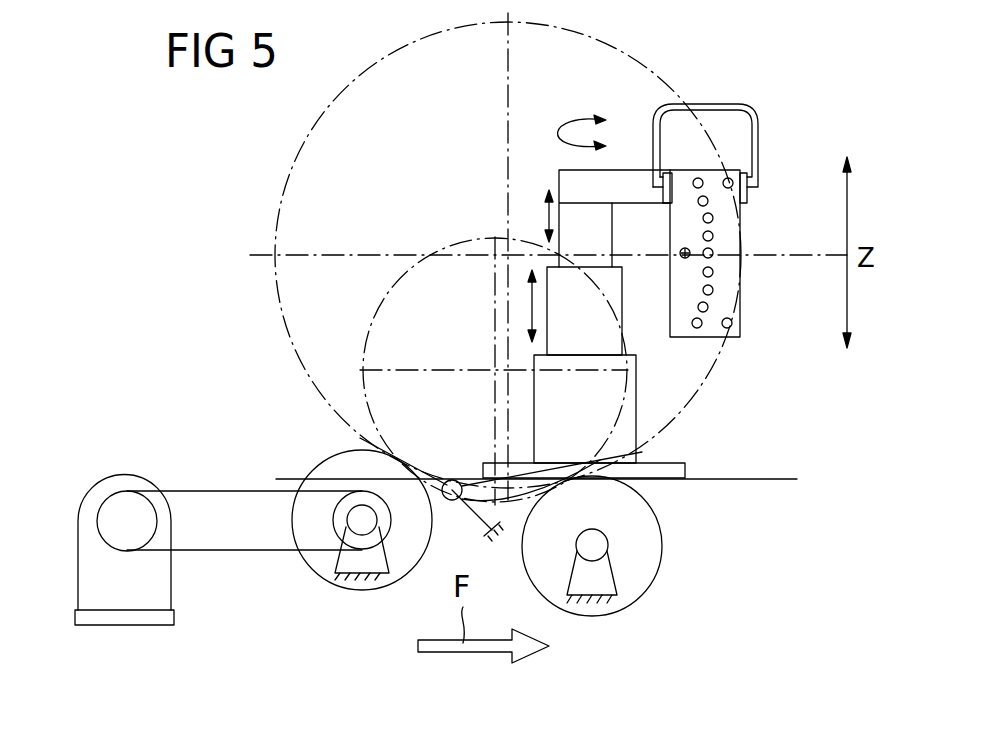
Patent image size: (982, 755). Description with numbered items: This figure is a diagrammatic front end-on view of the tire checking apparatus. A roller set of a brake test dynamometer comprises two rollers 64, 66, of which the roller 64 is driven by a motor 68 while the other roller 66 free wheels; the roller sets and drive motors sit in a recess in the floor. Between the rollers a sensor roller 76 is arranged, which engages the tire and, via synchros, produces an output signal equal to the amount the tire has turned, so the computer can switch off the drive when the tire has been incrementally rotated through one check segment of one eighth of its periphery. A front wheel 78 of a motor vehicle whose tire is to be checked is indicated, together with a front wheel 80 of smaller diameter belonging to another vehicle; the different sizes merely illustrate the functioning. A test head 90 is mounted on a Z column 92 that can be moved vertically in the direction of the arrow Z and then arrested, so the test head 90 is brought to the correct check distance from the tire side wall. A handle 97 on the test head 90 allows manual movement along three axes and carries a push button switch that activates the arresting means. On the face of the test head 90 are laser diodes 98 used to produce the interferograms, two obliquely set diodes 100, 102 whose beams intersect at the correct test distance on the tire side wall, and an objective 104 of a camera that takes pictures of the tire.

The roller 64 is at (317, 565).
The roller 66 is at (647, 572).
The motor 68 is at (115, 510).
The sensor roller 76 is at (447, 505).
The front wheel 78 is at (312, 192).
The front wheel 80 is at (400, 298).
The test head 90 is at (713, 322).
The Z column 92 is at (622, 422).
The handle 97 is at (725, 105).
The laser diodes 98 is at (742, 222).
The diode 100 is at (732, 180).
The diode 102 is at (733, 321).
The objective 104 is at (684, 259).